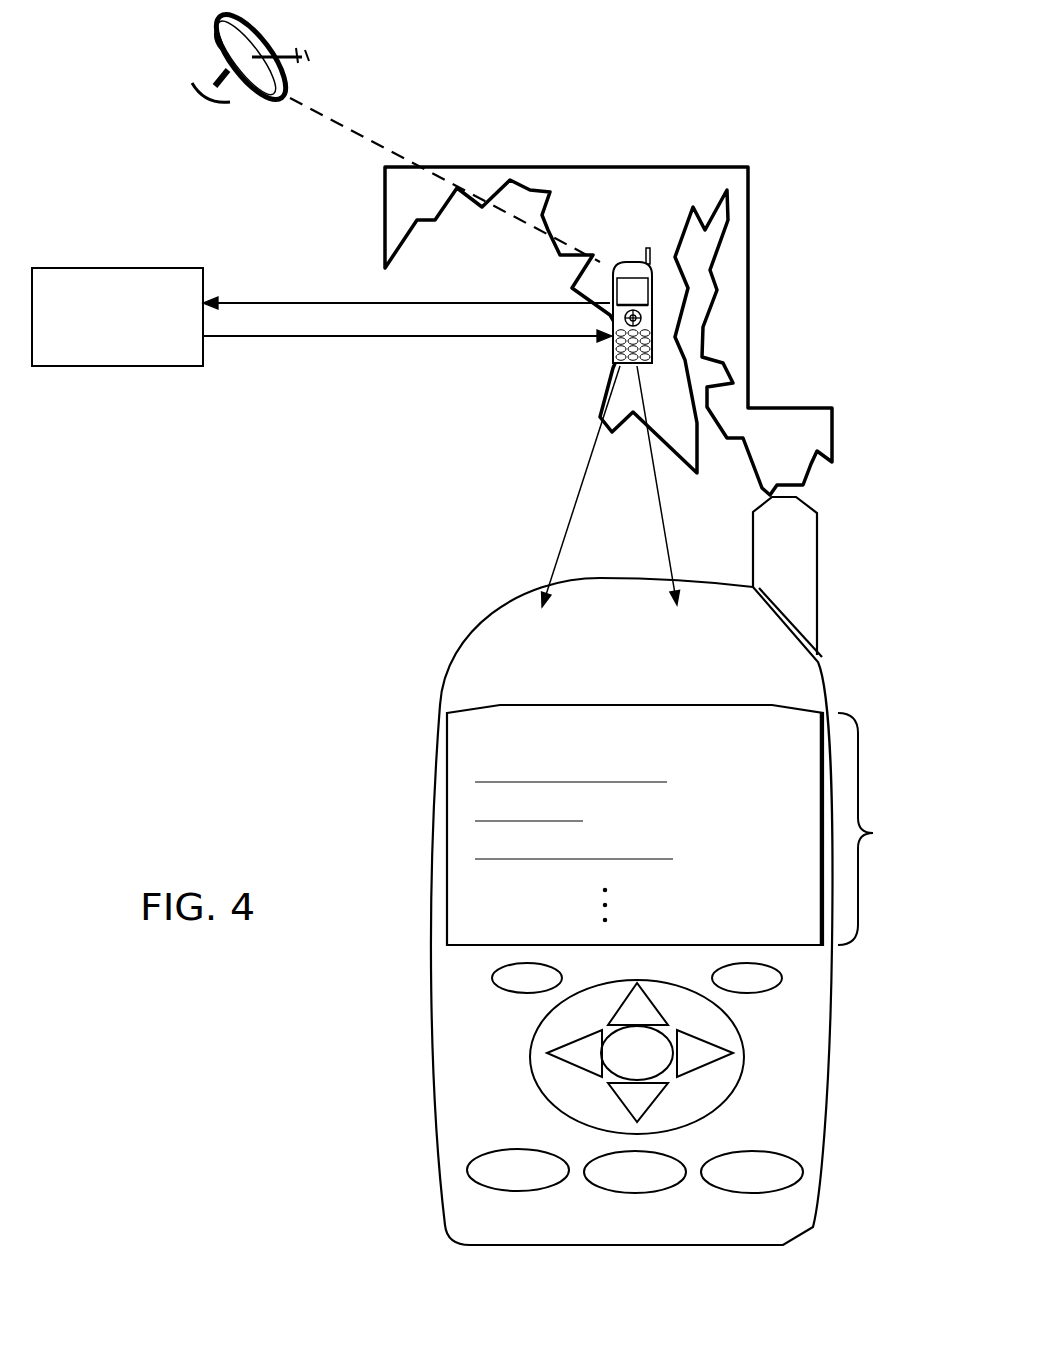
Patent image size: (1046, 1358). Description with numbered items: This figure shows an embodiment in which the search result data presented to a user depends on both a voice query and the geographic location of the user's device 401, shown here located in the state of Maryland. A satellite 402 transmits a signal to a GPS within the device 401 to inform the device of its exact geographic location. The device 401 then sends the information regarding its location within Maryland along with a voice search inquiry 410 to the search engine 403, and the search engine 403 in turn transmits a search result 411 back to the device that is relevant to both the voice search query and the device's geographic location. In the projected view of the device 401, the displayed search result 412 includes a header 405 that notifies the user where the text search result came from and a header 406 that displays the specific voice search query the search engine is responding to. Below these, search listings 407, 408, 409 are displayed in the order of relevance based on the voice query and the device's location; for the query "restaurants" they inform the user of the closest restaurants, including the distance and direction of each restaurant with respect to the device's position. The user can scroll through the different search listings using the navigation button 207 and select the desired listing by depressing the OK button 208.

The device 401 is at (638, 258).
The satellite 402 is at (258, 28).
The search engine 403 is at (158, 268).
The header 405 is at (447, 713).
The header 406 is at (447, 742).
The search listing 407 is at (447, 767).
The search listing 408 is at (447, 797).
The search listing 409 is at (447, 847).
The voice search inquiry 410 is at (293, 302).
The search result 411 is at (293, 337).
The search result 412 is at (877, 829).
The navigation button 207 is at (717, 1080).
The OK button 208 is at (660, 1044).